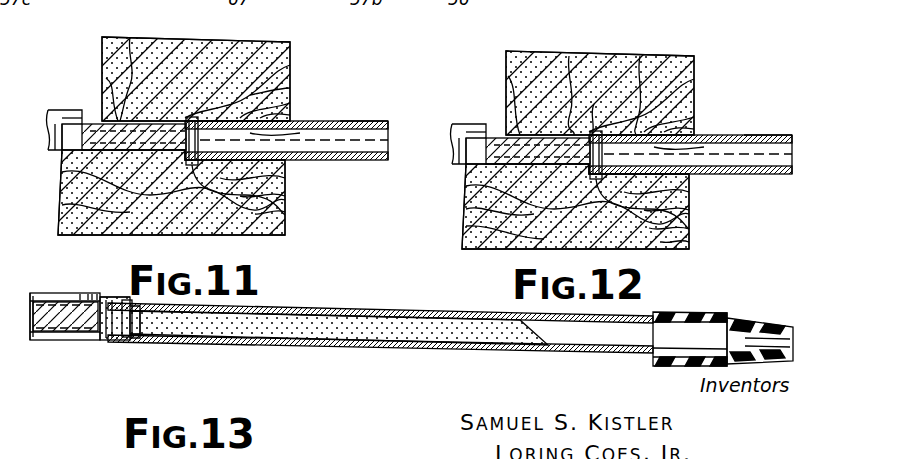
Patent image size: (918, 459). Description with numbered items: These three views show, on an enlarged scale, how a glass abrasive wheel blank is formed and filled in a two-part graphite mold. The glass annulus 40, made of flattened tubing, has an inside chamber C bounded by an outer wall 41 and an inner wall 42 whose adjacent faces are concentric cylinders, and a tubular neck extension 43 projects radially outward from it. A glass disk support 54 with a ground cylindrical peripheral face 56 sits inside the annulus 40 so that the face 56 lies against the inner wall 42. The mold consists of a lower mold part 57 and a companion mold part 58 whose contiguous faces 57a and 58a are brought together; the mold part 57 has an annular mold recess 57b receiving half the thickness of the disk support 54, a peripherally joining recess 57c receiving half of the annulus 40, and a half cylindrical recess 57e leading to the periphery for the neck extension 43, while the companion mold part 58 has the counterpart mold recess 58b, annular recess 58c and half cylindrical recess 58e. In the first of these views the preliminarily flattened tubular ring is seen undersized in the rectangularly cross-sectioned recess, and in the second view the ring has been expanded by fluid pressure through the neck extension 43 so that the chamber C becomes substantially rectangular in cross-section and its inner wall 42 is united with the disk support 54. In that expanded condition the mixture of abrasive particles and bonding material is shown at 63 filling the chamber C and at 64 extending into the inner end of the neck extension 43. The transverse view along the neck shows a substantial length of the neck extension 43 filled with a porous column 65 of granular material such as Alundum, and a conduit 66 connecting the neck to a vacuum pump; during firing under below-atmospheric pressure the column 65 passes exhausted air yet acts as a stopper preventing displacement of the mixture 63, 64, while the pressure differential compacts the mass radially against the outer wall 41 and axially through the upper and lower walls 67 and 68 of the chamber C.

In FIG. 11, the annulus 40 is at (43, 135).
In FIG. 12, the annulus 40 is at (453, 131).
In FIG. 13, the annulus 40 is at (59, 349).
In FIG. 12, the outer wall 41 is at (641, 70).
In FIG. 11, the inner wall 42 is at (165, 121).
In FIG. 12, the inner wall 42 is at (538, 95).
In FIG. 13, the inner wall 42 is at (85, 340).
In FIG. 11, the tubular extension or neck 43 is at (372, 161).
In FIG. 12, the tubular extension or neck 43 is at (690, 154).
In FIG. 13, the tubular extension or neck 43 is at (445, 352).
In FIG. 11, the support or backing element 54 is at (62, 182).
In FIG. 12, the support or backing element 54 is at (475, 131).
In FIG. 13, the support or backing element 54 is at (40, 340).
In FIG. 11, the peripheral face 56 is at (130, 37).
In FIG. 12, the peripheral face 56 is at (478, 224).
In FIG. 13, the peripheral face 56 is at (182, 343).
In FIG. 11, the mold part 57 is at (290, 236).
In FIG. 12, the mold part 57 is at (550, 206).
In FIG. 11, the contiguous face 57a is at (62, 118).
In FIG. 12, the contiguous face 57a is at (459, 103).
In FIG. 11, the annular mold recess 57b is at (62, 205).
In FIG. 12, the annular mold recess 57b is at (472, 203).
In FIG. 11, the recess 57c is at (285, 196).
In FIG. 12, the recess 57c is at (693, 209).
In FIG. 11, the half cylindrical recess 57e is at (285, 178).
In FIG. 12, the half cylindrical recess 57e is at (666, 166).
In FIG. 11, the companion mold part 58 is at (222, 52).
In FIG. 12, the companion mold part 58 is at (600, 84).
In FIG. 11, the contiguous face 58a is at (362, 122).
In FIG. 12, the contiguous face 58a is at (756, 121).
In FIG. 11, the mold recess 58b is at (106, 78).
In FIG. 12, the mold recess 58b is at (481, 92).
In FIG. 11, the annular recess 58c is at (290, 88).
In FIG. 12, the annular recess 58c is at (596, 82).
In FIG. 11, the half cylindrical recess 58e is at (290, 115).
In FIG. 12, the half cylindrical recess 58e is at (704, 108).
In FIG. 13, the mixture 63 is at (118, 340).
In FIG. 13, the mixture 64 is at (140, 340).
In FIG. 13, the porous column of granular material 65 is at (300, 325).
In FIG. 13, the conduit 66 is at (665, 368).
In FIG. 12, the upper wall 67 is at (564, 68).
In FIG. 13, the upper wall 67 is at (110, 298).
In FIG. 12, the lower wall 68 is at (692, 231).
In FIG. 13, the lower wall 68 is at (125, 340).
In FIG. 11, the chamber C is at (285, 212).
In FIG. 12, the chamber C is at (690, 249).